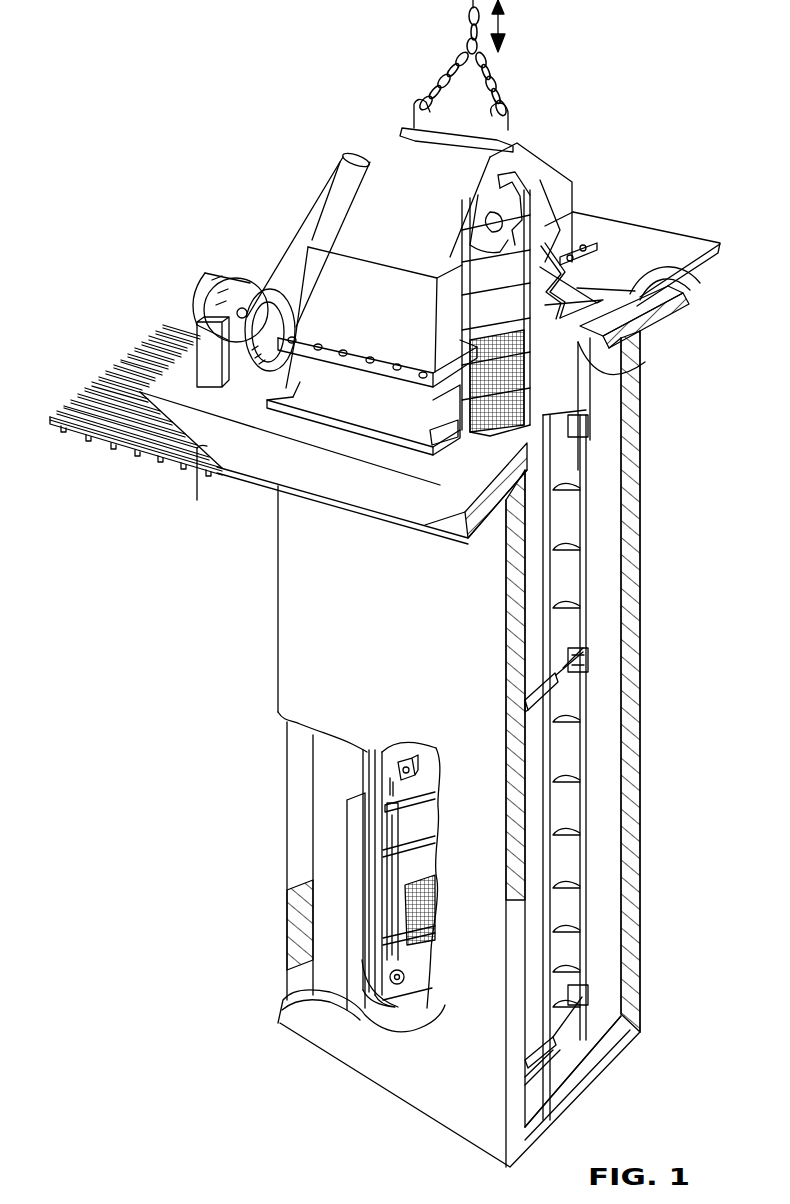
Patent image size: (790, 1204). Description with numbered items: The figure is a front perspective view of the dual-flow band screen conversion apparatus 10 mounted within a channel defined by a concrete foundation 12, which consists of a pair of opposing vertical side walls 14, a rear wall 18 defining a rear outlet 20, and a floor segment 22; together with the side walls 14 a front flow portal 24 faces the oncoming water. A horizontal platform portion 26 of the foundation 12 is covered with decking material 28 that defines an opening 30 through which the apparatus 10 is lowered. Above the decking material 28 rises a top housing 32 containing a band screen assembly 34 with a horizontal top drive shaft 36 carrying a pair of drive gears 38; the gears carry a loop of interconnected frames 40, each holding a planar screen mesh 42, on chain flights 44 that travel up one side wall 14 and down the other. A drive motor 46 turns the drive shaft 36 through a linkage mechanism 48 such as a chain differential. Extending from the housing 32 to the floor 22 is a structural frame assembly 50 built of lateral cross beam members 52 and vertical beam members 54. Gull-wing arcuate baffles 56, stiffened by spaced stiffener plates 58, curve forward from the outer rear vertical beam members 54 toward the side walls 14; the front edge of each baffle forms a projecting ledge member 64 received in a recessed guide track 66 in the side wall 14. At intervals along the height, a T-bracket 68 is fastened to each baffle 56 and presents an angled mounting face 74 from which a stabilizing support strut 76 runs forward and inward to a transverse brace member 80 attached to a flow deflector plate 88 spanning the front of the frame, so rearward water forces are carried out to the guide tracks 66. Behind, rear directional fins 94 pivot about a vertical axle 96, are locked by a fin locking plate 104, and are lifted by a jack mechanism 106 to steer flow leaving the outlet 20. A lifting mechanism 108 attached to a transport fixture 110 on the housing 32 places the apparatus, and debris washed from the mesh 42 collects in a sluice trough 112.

The dual-flow band screen conversion apparatus 10 is at (672, 165).
The foundation 12 is at (645, 846).
The side walls 14 is at (354, 664).
The rear wall 18 is at (322, 822).
The rear outlet 20 is at (356, 866).
The floor segment 22 is at (578, 1053).
The front flow portal 24 is at (605, 1036).
The platform portion 26 is at (488, 515).
The decking material 28 is at (247, 468).
The opening 30 is at (672, 283).
The top housing 32 is at (529, 163).
The band screen assembly 34 is at (545, 235).
The top drive shaft 36 is at (500, 230).
The drive gears 38 is at (500, 200).
The interconnected frames 40 is at (479, 336).
The screen mesh 42 is at (453, 378).
The chain flights 44 is at (460, 285).
The drive motor 46 is at (201, 292).
The linkage mechanism 48 is at (355, 160).
The structural frame assembly 50 is at (348, 783).
The lateral cross beam members 52 is at (433, 880).
The vertical beam members 54 is at (355, 750).
The arcuate baffles 56 is at (572, 503).
The stiffener plates 58 is at (563, 480).
The projecting ledge member 64 is at (627, 367).
The recessed guide track 66 is at (648, 333).
The T-bracket 68 is at (580, 636).
The mounting face 74 is at (570, 668).
The stabilizing support strut 76 is at (563, 680).
The transverse brace member 80 is at (532, 733).
The flow deflector plate 88 is at (534, 655).
The rear directional fins 94 is at (397, 832).
The vertical axle 96 is at (427, 1007).
The fin locking plate 104 is at (430, 987).
The jack mechanism 106 is at (427, 750).
The lifting mechanism 108 is at (450, 63).
The transport fixture 110 is at (408, 138).
The sluice trough 112 is at (570, 300).